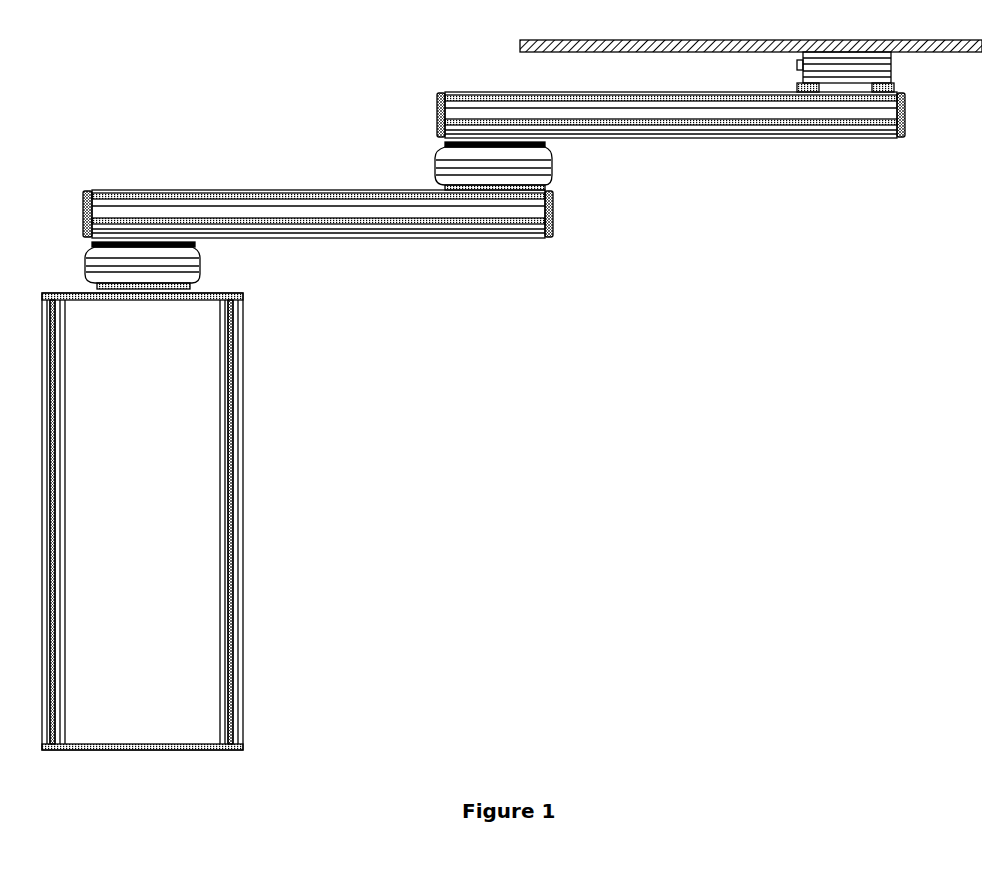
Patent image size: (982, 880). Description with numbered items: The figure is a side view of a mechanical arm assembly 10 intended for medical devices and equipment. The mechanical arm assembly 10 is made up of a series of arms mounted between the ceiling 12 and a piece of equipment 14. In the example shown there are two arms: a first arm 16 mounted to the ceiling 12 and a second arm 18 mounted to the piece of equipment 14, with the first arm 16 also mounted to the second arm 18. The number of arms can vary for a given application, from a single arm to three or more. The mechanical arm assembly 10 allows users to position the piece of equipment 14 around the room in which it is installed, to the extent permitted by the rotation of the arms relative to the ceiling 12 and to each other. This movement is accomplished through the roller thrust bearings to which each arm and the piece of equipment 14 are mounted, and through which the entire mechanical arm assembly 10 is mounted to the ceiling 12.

The mechanical arm assembly 10 is at (622, 500).
The ceiling 12 is at (540, 52).
The piece of equipment 14 is at (221, 521).
The first arm 16 is at (702, 169).
The second arm 18 is at (320, 264).